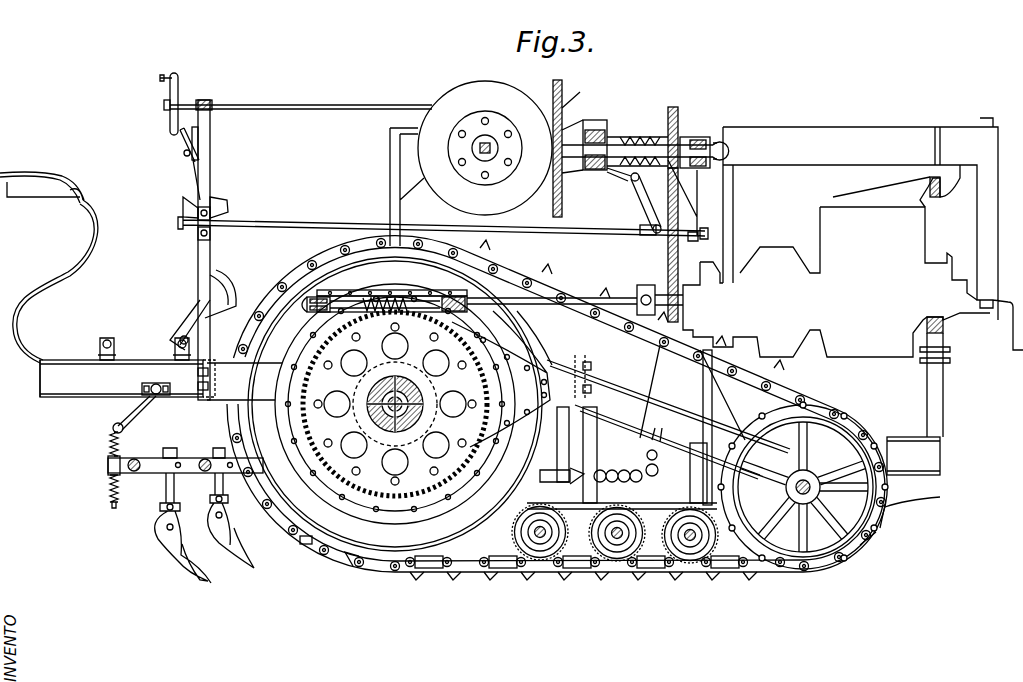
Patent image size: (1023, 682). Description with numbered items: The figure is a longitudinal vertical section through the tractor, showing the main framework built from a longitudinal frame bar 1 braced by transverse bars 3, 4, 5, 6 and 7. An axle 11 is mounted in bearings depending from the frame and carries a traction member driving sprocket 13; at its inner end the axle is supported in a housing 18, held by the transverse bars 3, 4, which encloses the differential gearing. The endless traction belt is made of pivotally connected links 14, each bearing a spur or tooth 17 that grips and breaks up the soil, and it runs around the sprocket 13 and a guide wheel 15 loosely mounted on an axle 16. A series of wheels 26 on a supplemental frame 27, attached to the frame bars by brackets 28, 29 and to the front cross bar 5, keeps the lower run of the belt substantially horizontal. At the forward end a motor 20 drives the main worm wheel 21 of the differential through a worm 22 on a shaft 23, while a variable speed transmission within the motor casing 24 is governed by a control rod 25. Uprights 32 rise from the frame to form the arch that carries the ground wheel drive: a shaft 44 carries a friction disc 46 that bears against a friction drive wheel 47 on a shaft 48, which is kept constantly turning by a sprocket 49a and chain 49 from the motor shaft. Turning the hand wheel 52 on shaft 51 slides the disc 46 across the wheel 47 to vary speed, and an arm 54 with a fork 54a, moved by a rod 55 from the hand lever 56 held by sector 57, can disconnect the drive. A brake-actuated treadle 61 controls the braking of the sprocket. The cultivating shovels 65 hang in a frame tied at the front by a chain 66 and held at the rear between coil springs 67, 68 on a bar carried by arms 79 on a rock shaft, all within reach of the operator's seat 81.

The longitudinal frame bar 1 is at (100, 388).
The transverse frame bar 3 is at (198, 390).
The transverse frame bar 4 is at (592, 392).
The front cross bar 5 is at (940, 462).
The transverse frame bar 6 is at (40, 371).
The transverse frame bar 7 is at (702, 423).
The axle 11 is at (402, 404).
The traction member driving sprocket 13 is at (428, 566).
The link 14 is at (306, 262).
The guide wheel 15 is at (838, 550).
The axle 16 is at (812, 492).
The spur or tooth 17 is at (472, 258).
The housing or casing 18 is at (292, 389).
The motor 20 is at (873, 237).
The main worm wheel 21 is at (482, 420).
The worm 22 is at (386, 296).
The shaft 23 is at (536, 297).
The motor casing 24 is at (732, 312).
The control rod 25 is at (306, 221).
The wheel 26 is at (520, 548).
The supplemental frame 27 is at (660, 508).
The bracket 28 is at (598, 452).
The bracket 29 is at (648, 457).
The upright 32 is at (392, 180).
The shaft 44 is at (482, 154).
The friction disc 46 is at (496, 76).
The friction drive wheel 47 is at (565, 108).
The shaft 48 is at (605, 143).
The chain 49 is at (666, 250).
The sprocket 49a is at (680, 125).
The shaft 51 is at (310, 106).
The hand wheel 52 is at (180, 88).
The arm 54 is at (642, 200).
The fork 54a is at (612, 180).
The rod 55 is at (646, 136).
The hand lever 56 is at (190, 168).
The sector 57 is at (216, 204).
The brake-actuated treadle 61 is at (222, 296).
The cultivating shovel 65 is at (220, 572).
The chain 66 is at (636, 482).
The coil spring 67 is at (110, 442).
The coil spring 68 is at (110, 484).
The arm 79 is at (124, 405).
The seat 81 is at (40, 172).